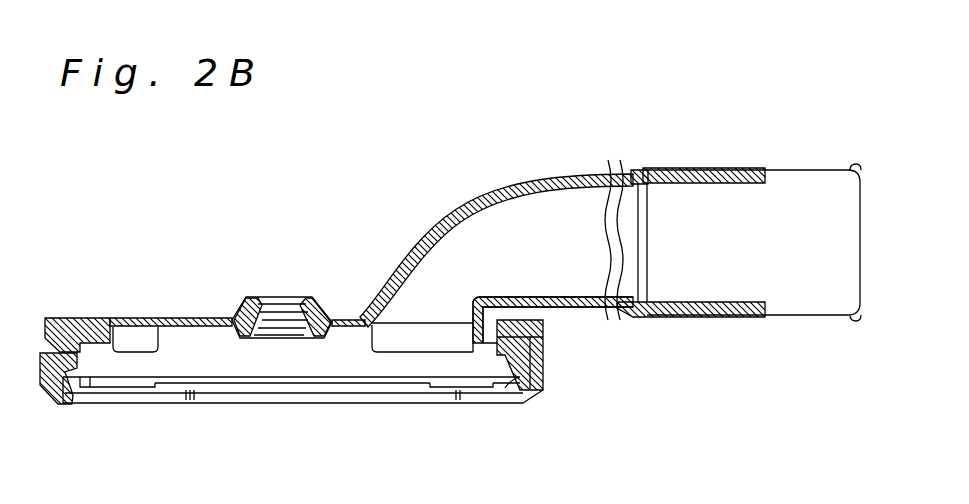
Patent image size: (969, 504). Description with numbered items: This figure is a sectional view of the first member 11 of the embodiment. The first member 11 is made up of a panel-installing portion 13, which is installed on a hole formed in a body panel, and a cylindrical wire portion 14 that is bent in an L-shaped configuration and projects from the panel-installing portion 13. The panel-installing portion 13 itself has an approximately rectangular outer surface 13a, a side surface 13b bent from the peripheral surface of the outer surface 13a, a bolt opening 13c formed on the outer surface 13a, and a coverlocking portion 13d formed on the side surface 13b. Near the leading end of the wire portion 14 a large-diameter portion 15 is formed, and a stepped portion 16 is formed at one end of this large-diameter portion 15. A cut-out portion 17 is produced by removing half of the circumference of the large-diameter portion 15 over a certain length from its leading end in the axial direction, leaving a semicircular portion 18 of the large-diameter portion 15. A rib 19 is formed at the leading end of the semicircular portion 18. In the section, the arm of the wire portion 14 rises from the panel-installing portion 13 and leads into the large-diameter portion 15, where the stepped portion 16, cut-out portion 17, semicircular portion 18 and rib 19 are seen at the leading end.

The first member 11 is at (521, 144).
The panel-installing portion 13 is at (238, 410).
The outer surface 13a is at (193, 318).
The side surface 13b is at (37, 392).
The bolt opening 13c is at (293, 312).
The coverlocking portion 13d is at (40, 322).
The wire portion 14 is at (643, 327).
The large-diameter portion 15 is at (708, 317).
The stepped portion 16 is at (633, 176).
The cut-out portion 17 is at (720, 190).
The semicircular portion 18 is at (805, 307).
The rib 19 is at (853, 320).